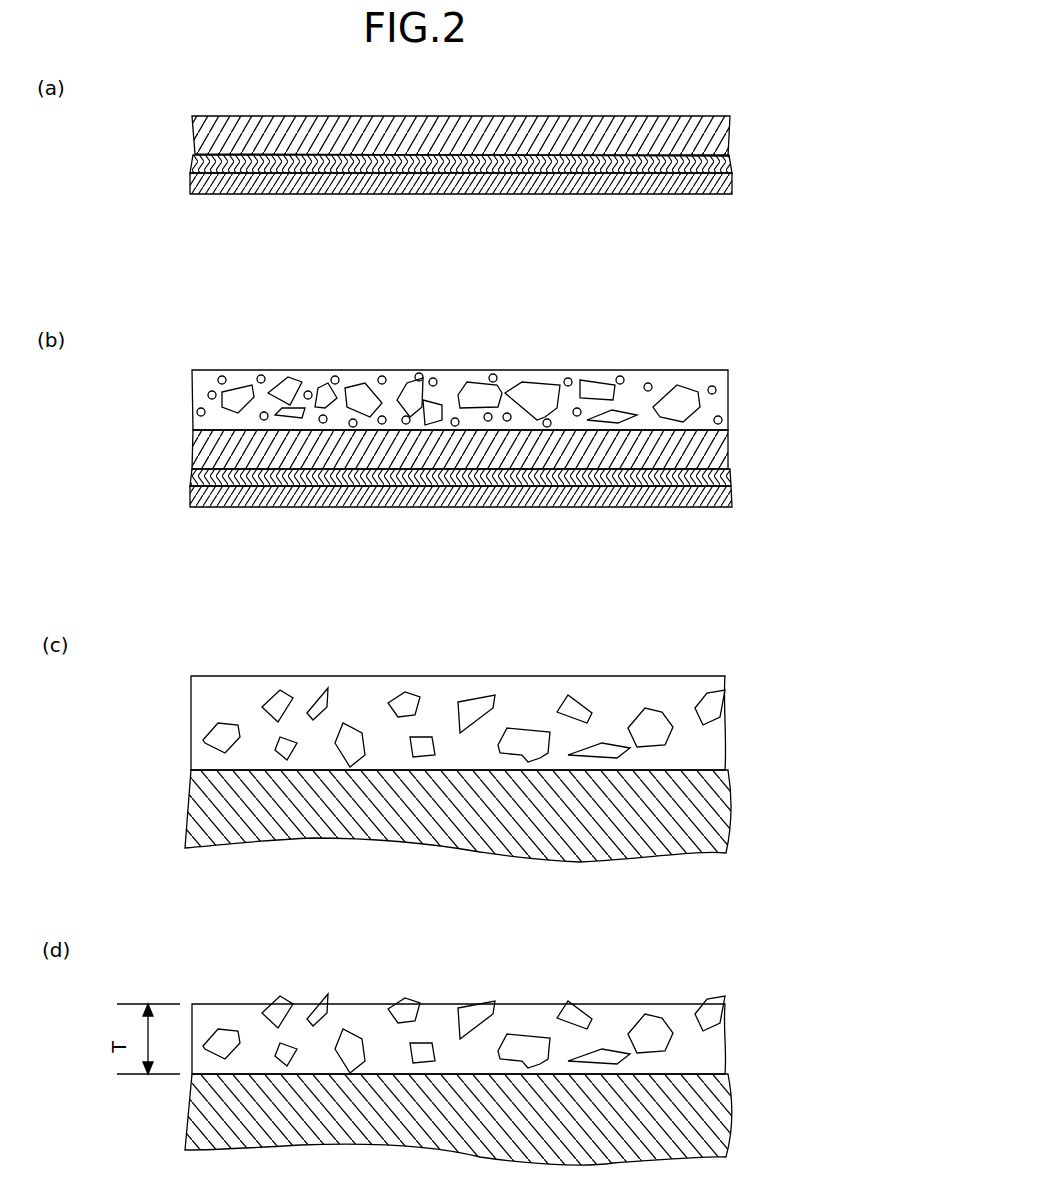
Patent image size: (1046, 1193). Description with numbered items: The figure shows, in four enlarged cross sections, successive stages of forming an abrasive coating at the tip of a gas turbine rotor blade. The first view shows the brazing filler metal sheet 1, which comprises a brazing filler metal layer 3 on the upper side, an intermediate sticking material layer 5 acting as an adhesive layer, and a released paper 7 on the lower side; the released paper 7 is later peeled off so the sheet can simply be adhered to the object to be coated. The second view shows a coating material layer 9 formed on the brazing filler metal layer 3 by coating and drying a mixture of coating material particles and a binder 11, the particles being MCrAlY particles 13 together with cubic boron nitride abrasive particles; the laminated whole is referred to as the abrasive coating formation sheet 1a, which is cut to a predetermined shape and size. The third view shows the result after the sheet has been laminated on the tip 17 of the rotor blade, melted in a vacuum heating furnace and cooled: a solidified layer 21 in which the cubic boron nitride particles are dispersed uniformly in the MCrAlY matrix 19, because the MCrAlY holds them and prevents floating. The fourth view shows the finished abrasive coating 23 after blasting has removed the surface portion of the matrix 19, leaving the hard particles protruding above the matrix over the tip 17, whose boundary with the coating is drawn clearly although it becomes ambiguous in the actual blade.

The brazing filler metal sheet 1 is at (507, 274).
The abrasive coating formation sheet 1a is at (506, 344).
The brazing filler metal layer 3 is at (730, 140).
The intermediate sticking material layer 5 is at (733, 163).
The released paper 7 is at (733, 183).
The coating material layer 9 is at (506, 348).
The binder 11 is at (452, 380).
The MCrAlY particles 13 is at (332, 383).
The tip of the rotor blade 17 is at (725, 808).
The MCrAlY matrix 19 is at (610, 702).
The solidified layer 21 is at (722, 737).
The abrasive coating 23 is at (722, 1040).